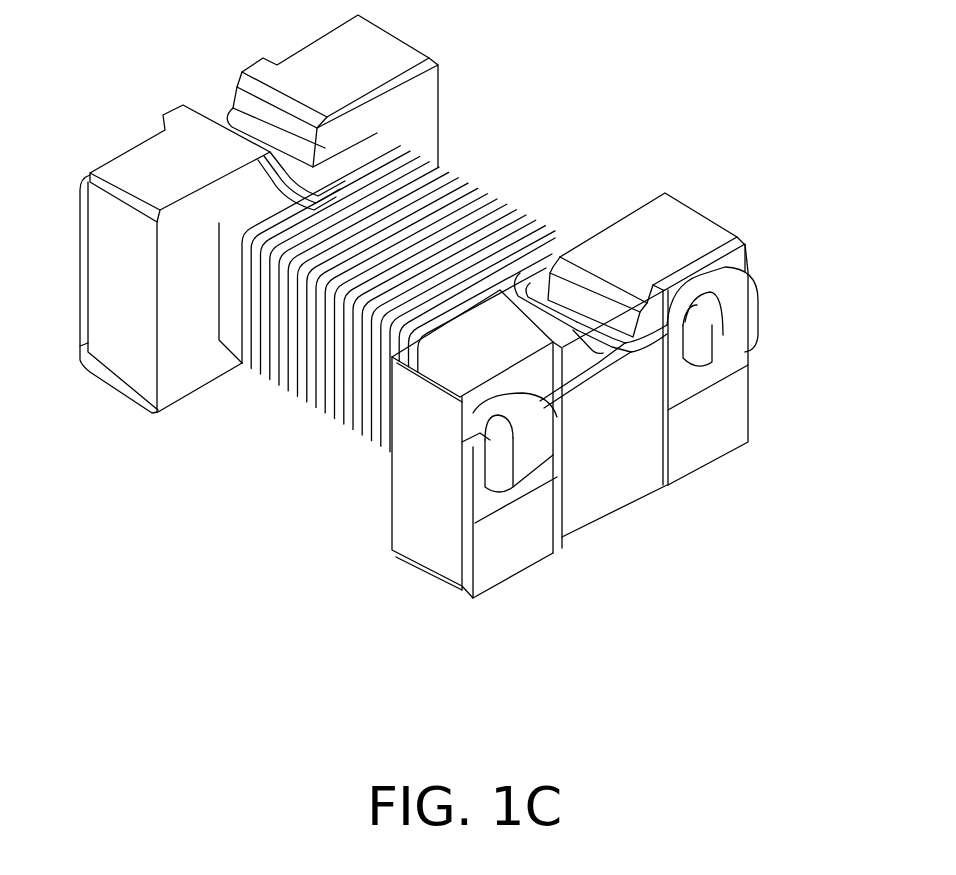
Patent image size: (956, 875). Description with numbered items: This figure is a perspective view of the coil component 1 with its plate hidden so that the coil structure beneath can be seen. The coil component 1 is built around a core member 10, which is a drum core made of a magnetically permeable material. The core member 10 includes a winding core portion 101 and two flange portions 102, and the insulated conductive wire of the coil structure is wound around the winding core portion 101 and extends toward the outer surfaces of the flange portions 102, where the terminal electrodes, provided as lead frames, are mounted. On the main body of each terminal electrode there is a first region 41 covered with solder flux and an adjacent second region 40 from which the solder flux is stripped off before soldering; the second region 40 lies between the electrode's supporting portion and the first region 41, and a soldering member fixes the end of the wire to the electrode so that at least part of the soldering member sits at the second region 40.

The coil component 1 is at (676, 61).
The core member 10 is at (603, 130).
The winding core portion 101 is at (380, 143).
The flange portion 102 is at (632, 232).
The second region 40 is at (490, 500).
The first region 41 is at (703, 437).